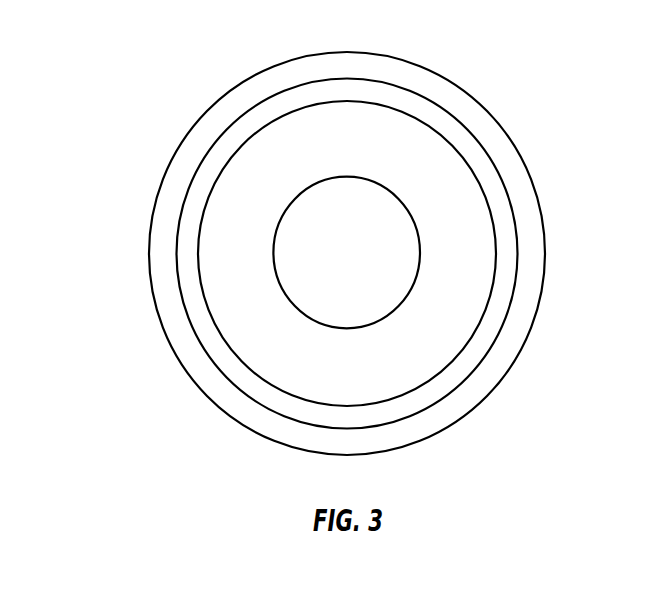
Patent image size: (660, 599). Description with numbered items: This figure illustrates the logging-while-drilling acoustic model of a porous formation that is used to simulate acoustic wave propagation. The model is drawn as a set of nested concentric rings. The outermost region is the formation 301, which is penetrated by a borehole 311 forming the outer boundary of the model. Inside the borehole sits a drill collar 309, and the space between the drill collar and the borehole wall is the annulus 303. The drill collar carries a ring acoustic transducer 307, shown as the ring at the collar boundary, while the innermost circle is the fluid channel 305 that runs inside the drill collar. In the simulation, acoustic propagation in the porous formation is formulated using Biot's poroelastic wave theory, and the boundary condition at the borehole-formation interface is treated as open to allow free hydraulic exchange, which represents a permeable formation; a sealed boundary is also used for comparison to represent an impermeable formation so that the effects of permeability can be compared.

The formation 301 is at (113, 64).
The annulus 303 is at (291, 67).
The fluid channel 305 is at (293, 258).
The ring acoustic transducer 307 is at (435, 130).
The drill collar 309 is at (475, 223).
The borehole 311 is at (545, 255).